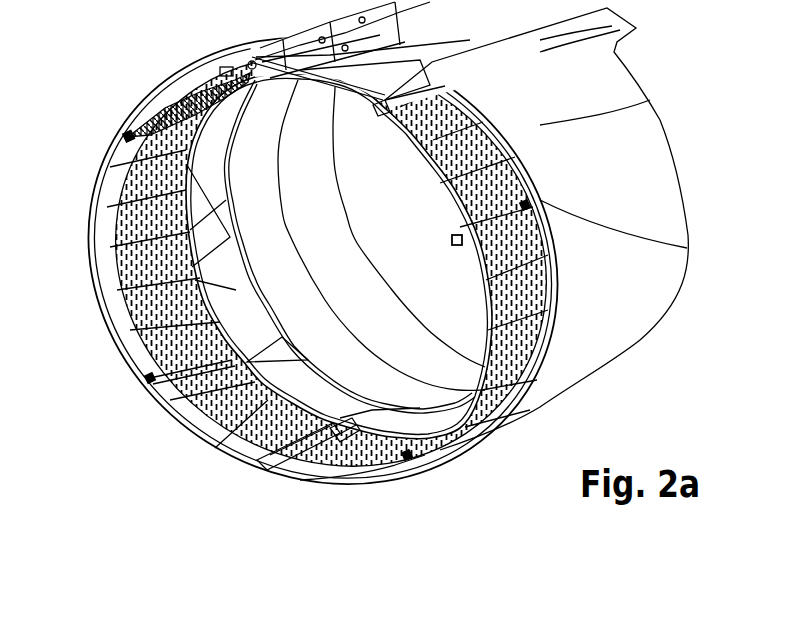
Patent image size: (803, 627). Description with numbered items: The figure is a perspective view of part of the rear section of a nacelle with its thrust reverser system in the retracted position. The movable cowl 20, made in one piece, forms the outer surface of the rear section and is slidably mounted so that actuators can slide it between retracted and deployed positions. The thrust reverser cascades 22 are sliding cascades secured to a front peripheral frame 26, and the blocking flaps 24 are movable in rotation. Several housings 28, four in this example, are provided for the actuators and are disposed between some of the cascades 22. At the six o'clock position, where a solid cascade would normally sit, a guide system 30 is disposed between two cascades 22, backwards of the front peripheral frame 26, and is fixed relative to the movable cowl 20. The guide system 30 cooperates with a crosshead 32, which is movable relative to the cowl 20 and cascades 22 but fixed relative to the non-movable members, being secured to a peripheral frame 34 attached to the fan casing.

The movable cowl 20 is at (627, 173).
The thrust reverser cascades 22 is at (124, 256).
The blocking flaps 24 is at (200, 200).
The front peripheral frame 26 is at (350, 483).
The housings 28 is at (128, 136).
The guide system 30 is at (313, 480).
The crosshead 32 is at (346, 468).
The peripheral frame 34 is at (277, 394).